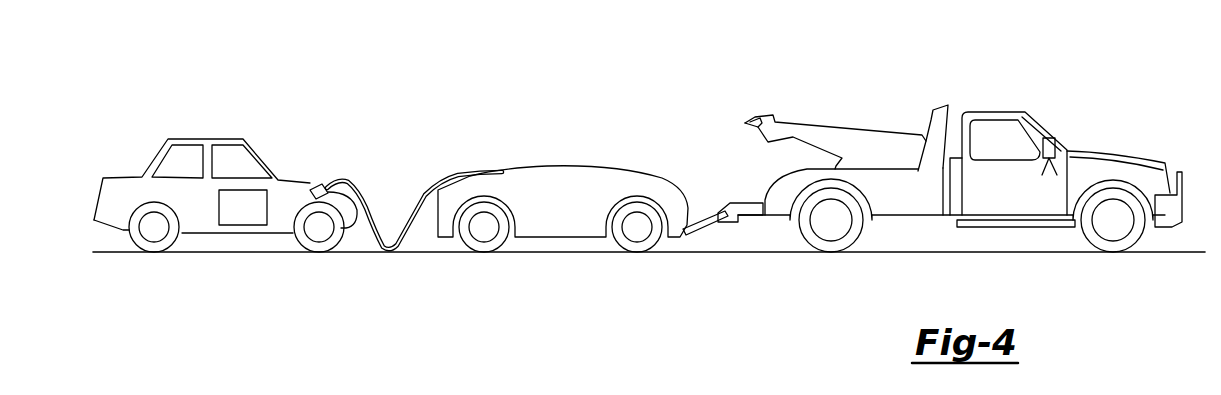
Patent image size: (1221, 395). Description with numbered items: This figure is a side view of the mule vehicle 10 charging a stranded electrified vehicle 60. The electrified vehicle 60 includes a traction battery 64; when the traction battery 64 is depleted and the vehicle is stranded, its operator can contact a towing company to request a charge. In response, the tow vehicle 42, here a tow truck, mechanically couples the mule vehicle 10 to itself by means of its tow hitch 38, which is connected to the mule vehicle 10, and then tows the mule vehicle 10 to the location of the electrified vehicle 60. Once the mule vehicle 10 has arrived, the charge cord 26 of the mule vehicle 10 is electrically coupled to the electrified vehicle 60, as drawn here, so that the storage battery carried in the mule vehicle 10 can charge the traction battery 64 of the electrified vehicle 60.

The mule vehicle 10 is at (621, 148).
The charge cord 26 is at (407, 234).
The tow hitch 38 is at (710, 236).
The tow vehicle 42 is at (1123, 137).
The electrified vehicle 60 is at (228, 198).
The traction battery 64 is at (243, 225).